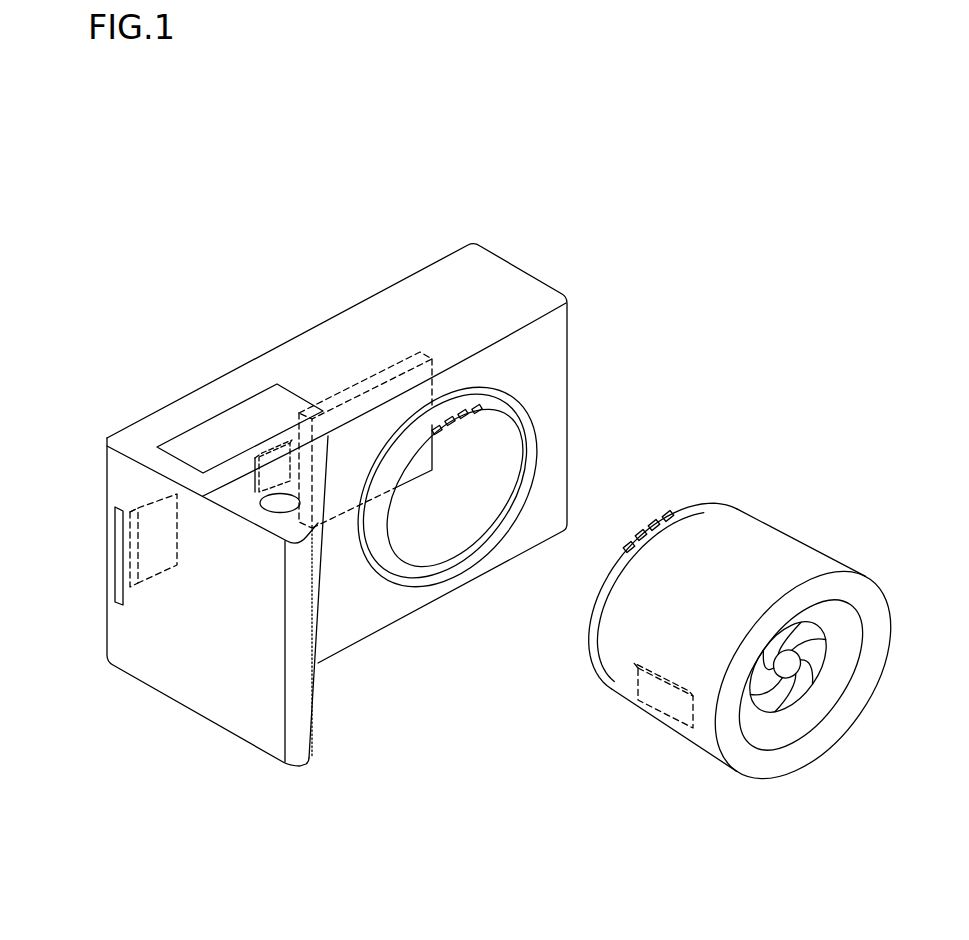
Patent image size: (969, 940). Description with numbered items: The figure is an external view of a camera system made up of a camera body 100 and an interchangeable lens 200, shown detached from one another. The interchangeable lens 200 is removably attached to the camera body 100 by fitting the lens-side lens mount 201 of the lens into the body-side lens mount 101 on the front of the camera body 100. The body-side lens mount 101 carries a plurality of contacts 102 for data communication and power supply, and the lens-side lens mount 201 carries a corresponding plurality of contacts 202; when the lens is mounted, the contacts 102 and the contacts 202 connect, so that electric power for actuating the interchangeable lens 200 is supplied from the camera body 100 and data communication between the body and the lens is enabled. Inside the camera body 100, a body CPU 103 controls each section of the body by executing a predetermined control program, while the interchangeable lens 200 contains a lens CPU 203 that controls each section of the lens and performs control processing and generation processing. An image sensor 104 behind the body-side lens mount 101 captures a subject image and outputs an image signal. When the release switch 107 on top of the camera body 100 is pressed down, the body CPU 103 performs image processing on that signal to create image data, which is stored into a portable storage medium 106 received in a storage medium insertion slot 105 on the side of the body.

The camera body 100 is at (497, 254).
The body-side lens mount 101 is at (533, 421).
The contacts 102 is at (488, 417).
The body CPU 103 is at (262, 455).
The image sensor 104 is at (408, 352).
The storage medium insertion slot 105 is at (113, 552).
The portable storage medium 106 is at (130, 500).
The release switch 107 is at (281, 513).
The interchangeable lens 200 is at (760, 513).
The lens-side lens mount 201 is at (589, 630).
The contacts 202 is at (668, 502).
The lens CPU 203 is at (673, 713).